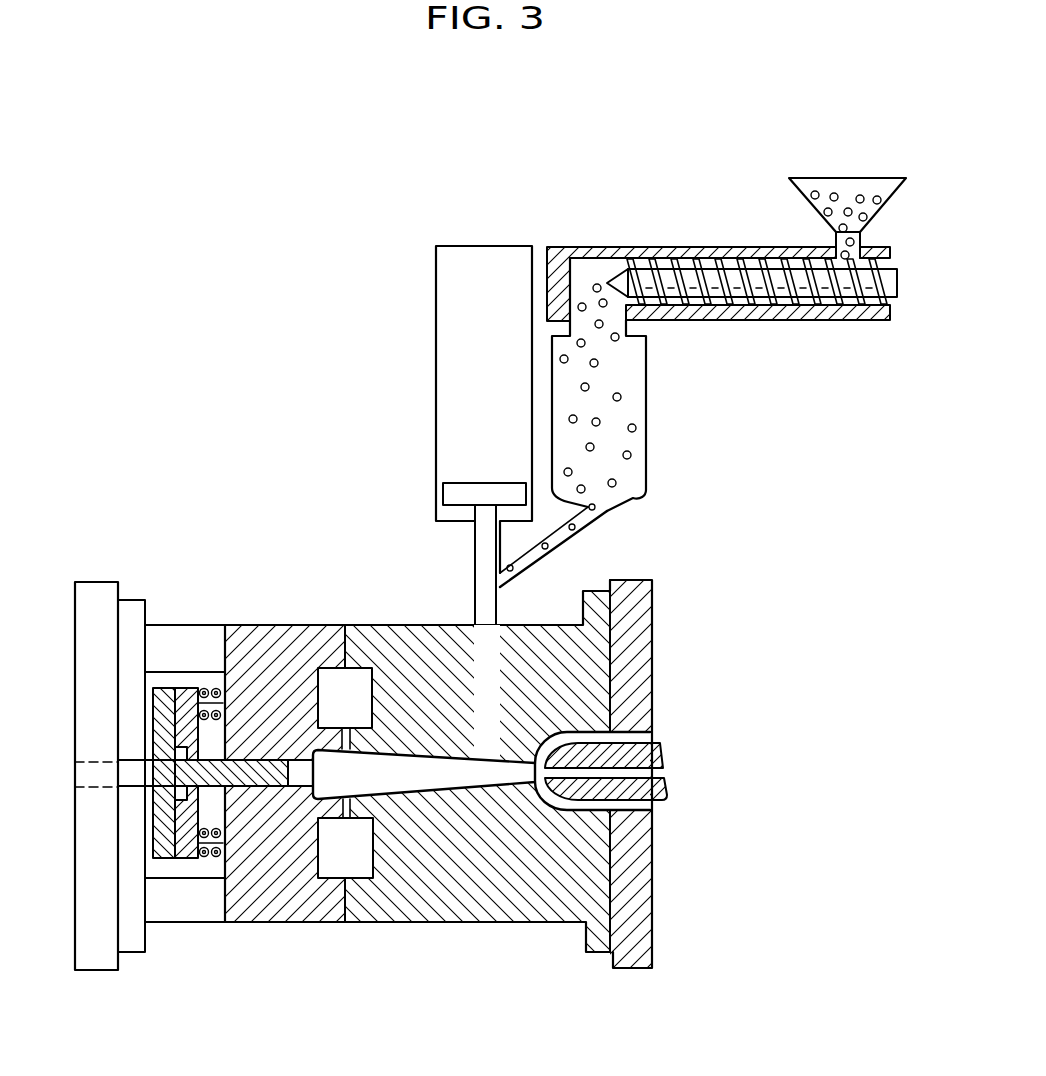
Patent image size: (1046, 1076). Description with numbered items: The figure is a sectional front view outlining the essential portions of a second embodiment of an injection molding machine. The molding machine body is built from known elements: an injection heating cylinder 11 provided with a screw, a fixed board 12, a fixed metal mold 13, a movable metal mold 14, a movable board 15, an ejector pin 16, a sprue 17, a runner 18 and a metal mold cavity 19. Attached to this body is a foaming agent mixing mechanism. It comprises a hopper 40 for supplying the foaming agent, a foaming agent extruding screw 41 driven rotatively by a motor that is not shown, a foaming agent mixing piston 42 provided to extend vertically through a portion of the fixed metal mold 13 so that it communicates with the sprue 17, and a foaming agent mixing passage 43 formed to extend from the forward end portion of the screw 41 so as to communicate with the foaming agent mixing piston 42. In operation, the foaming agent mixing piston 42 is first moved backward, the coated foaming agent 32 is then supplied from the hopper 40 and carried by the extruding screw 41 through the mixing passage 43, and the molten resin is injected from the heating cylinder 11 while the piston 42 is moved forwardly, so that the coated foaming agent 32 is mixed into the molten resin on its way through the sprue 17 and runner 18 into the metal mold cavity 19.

The injection heating cylinder 11 is at (661, 750).
The fixed board 12 is at (635, 961).
The fixed metal mold 13 is at (518, 918).
The movable metal mold 14 is at (292, 921).
The movable board 15 is at (102, 964).
The ejector pin 16 is at (298, 779).
The sprue 17 is at (435, 784).
The runner 18 is at (353, 805).
The metal mold cavity 19 is at (337, 686).
The foaming agent 32 is at (622, 397).
The hopper 40 is at (858, 177).
The foaming agent extruding screw 41 is at (699, 273).
The foaming agent mixing piston 42 is at (476, 560).
The foaming agent mixing passage 43 is at (593, 522).